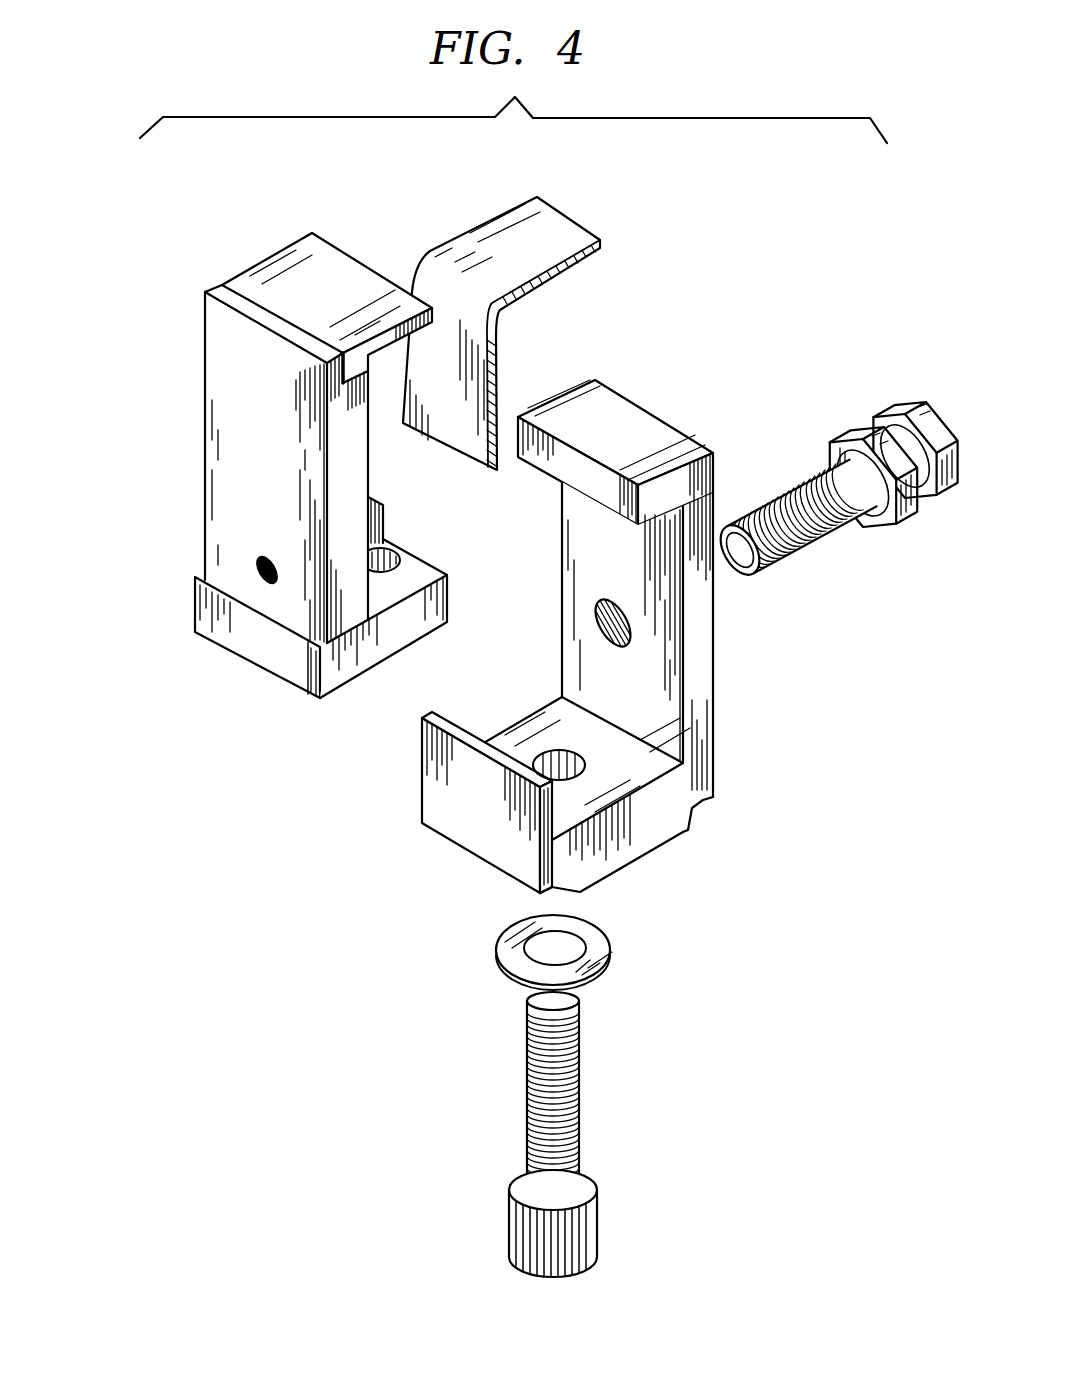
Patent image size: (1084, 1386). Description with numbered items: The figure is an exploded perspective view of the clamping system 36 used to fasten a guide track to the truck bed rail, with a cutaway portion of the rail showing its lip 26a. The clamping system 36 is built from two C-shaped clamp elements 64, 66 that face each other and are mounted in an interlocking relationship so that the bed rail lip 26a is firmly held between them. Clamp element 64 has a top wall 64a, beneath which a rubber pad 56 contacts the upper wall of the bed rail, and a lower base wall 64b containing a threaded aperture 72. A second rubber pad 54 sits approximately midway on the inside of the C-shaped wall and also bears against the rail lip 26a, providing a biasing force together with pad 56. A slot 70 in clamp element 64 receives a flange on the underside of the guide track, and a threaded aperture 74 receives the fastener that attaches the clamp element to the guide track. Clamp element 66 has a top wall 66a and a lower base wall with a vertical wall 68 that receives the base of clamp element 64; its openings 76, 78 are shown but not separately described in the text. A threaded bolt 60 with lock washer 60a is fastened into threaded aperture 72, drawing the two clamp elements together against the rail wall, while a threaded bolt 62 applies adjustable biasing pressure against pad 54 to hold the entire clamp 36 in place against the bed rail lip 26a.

The clamping system 36 is at (163, 260).
The truck bed rail lip 26a is at (492, 370).
The rubber pad 54 is at (420, 492).
The rubber pad 56 is at (400, 348).
The threaded bolt 60 is at (597, 1222).
The lock washer 60a is at (598, 946).
The bolt threaded connector 62 is at (930, 400).
The clamp element 64 is at (200, 436).
The top wall 64a is at (300, 252).
The lower flange of first clamp member 64b is at (378, 600).
The clamp element 66 is at (722, 675).
The upper flange of second clamp member 66a is at (647, 447).
The vertical wall 68 is at (542, 795).
The slot 70 is at (340, 385).
The threaded aperture 72 is at (382, 553).
The threaded aperture 74 is at (258, 566).
The hole in base 76 is at (590, 772).
The threaded hole in second clamp member 78 is at (627, 640).